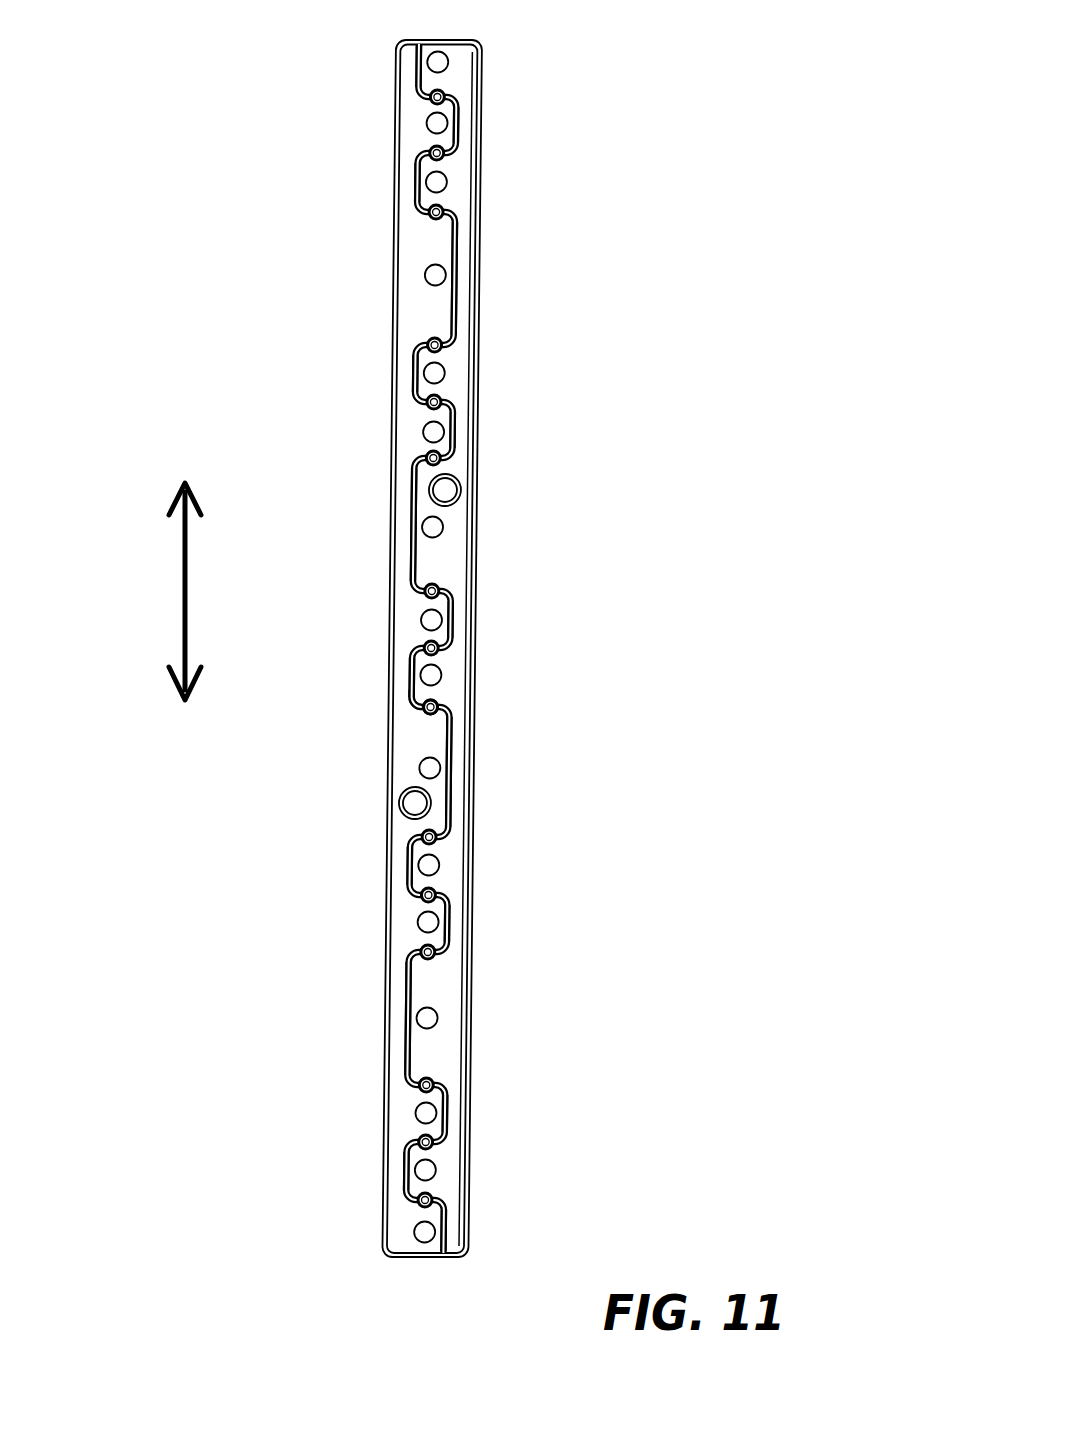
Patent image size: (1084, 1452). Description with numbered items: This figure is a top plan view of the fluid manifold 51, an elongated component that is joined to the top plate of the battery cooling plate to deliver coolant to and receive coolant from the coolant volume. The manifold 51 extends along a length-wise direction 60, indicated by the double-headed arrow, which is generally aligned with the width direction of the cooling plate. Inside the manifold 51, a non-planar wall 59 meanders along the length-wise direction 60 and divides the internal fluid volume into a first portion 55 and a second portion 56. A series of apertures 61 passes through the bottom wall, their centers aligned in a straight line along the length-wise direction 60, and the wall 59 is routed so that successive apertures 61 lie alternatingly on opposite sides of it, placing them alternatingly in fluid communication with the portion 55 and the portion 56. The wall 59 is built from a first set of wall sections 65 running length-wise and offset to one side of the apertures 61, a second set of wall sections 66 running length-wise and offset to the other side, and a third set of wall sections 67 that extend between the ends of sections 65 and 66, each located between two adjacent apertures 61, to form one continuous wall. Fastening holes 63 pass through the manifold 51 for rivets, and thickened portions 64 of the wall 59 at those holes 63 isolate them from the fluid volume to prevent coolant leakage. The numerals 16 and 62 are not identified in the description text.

The light strip 16 is at (452, 930).
The fluid manifold 51 is at (483, 42).
The first portion 55 is at (410, 247).
The second portion 56 is at (460, 568).
The non-planar wall 59 is at (420, 99).
The length-wise direction 60 is at (185, 592).
The apertures 61 is at (443, 66).
The mounting holes 62 is at (448, 490).
The fastening holes 63 is at (428, 712).
The thickened portions 64 is at (437, 706).
The first set of wall sections 65 is at (418, 66).
The second set of wall sections 66 is at (458, 125).
The third set of wall sections 67 is at (446, 96).